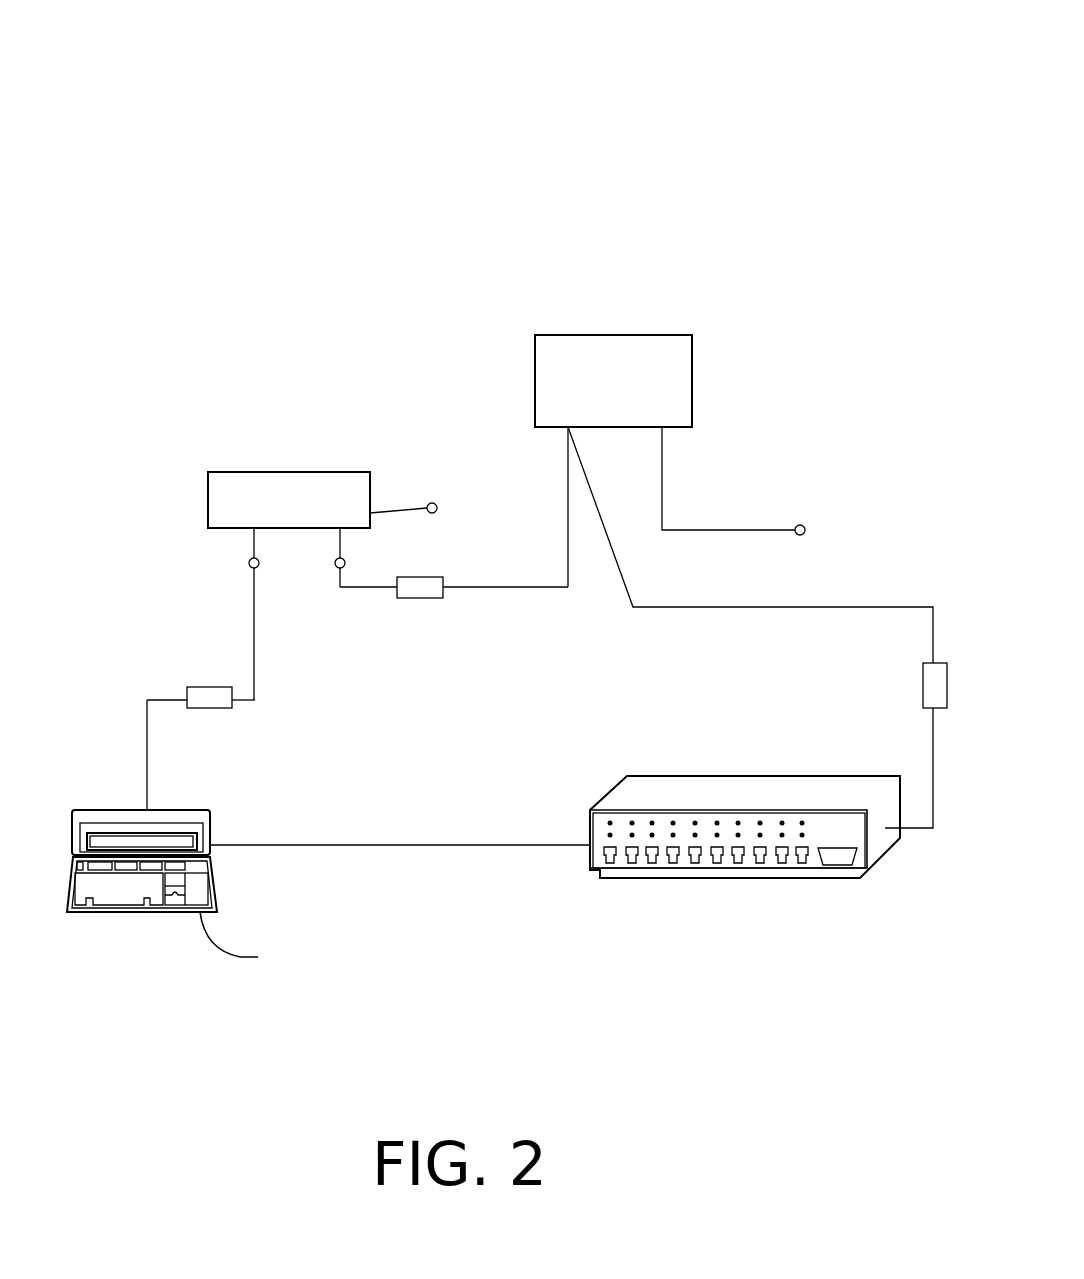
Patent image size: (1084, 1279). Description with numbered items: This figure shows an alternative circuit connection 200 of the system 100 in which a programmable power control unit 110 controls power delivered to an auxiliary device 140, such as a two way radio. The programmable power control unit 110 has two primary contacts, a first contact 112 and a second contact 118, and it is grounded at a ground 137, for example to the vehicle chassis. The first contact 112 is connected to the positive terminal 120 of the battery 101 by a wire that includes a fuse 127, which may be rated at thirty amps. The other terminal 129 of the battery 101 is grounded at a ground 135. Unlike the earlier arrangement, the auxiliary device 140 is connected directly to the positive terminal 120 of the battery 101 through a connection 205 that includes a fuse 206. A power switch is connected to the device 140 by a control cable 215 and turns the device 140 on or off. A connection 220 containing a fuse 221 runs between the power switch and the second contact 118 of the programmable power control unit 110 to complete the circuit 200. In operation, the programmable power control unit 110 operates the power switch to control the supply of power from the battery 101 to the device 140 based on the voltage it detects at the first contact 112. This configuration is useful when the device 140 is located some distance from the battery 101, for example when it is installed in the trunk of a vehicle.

The circuit connection 200 is at (750, 150).
The battery 101 is at (715, 370).
The programmable power control unit 110 is at (309, 472).
The ground 137 is at (436, 504).
The first contact 112 is at (346, 561).
The second contact 118 is at (249, 566).
The fuse 127 is at (428, 598).
The system 100 is at (530, 588).
The positive terminal 120 is at (563, 437).
The other terminal 129 is at (660, 430).
The ground 135 is at (804, 526).
The connection 205 is at (808, 608).
The fuse 206 is at (922, 687).
The fuse 221 is at (197, 687).
The connection 220 is at (148, 745).
The control cable 215 is at (430, 847).
The auxiliary device 140 is at (610, 780).